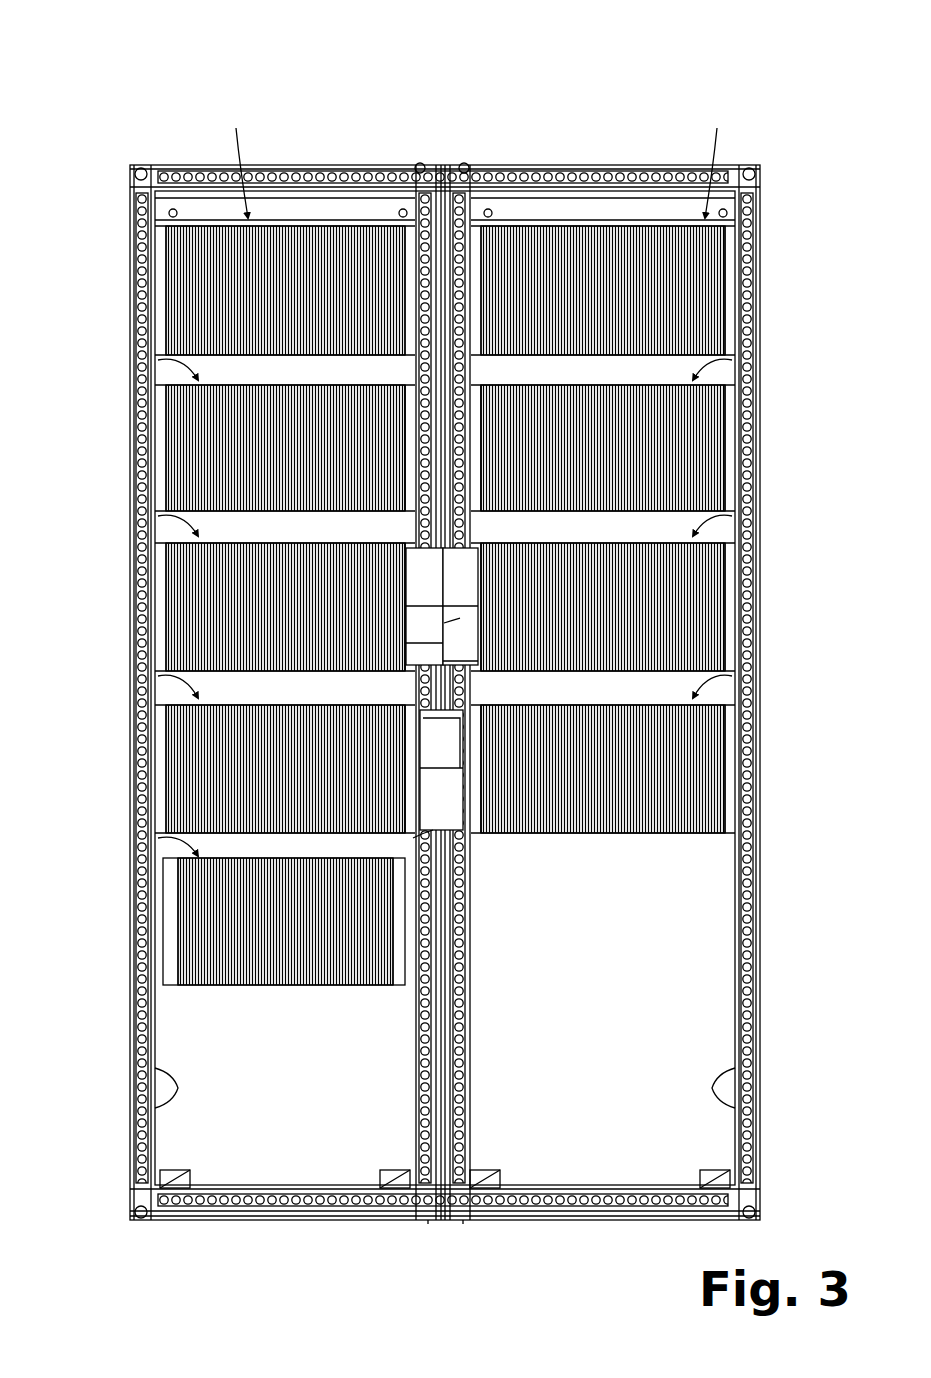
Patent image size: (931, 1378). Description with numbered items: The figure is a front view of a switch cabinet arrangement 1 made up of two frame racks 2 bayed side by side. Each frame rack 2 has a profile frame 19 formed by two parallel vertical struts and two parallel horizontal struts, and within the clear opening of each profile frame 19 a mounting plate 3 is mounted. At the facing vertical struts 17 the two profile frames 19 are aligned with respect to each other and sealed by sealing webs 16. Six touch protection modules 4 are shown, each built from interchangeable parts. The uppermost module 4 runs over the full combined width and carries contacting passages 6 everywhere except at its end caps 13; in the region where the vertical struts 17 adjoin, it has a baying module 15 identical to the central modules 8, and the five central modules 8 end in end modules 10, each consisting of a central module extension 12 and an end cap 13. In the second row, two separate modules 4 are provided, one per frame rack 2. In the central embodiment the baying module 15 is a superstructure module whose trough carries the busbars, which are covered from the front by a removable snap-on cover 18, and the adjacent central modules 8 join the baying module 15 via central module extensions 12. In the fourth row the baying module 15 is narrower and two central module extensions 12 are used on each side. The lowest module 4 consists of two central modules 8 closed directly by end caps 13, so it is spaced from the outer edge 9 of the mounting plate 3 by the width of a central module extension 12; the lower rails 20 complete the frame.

The assembly 1 is at (782, 78).
The frame rack 2 is at (290, 170).
The mounting plate 3 is at (345, 200).
The touch protection module 4 is at (785, 658).
The contacting passage 6 is at (265, 212).
The central module 8 is at (200, 218).
The outer edge 9 is at (134, 158).
The end module 10 is at (166, 200).
The central module extension 12 is at (470, 385).
The end cap 13 is at (147, 270).
The baying module 15 is at (435, 162).
The sealing web 16 is at (441, 1212).
The vertical strut 17 is at (148, 1060).
The cover 18 is at (420, 645).
The profile frame 19 is at (118, 1025).
The slot 20 is at (145, 1100).